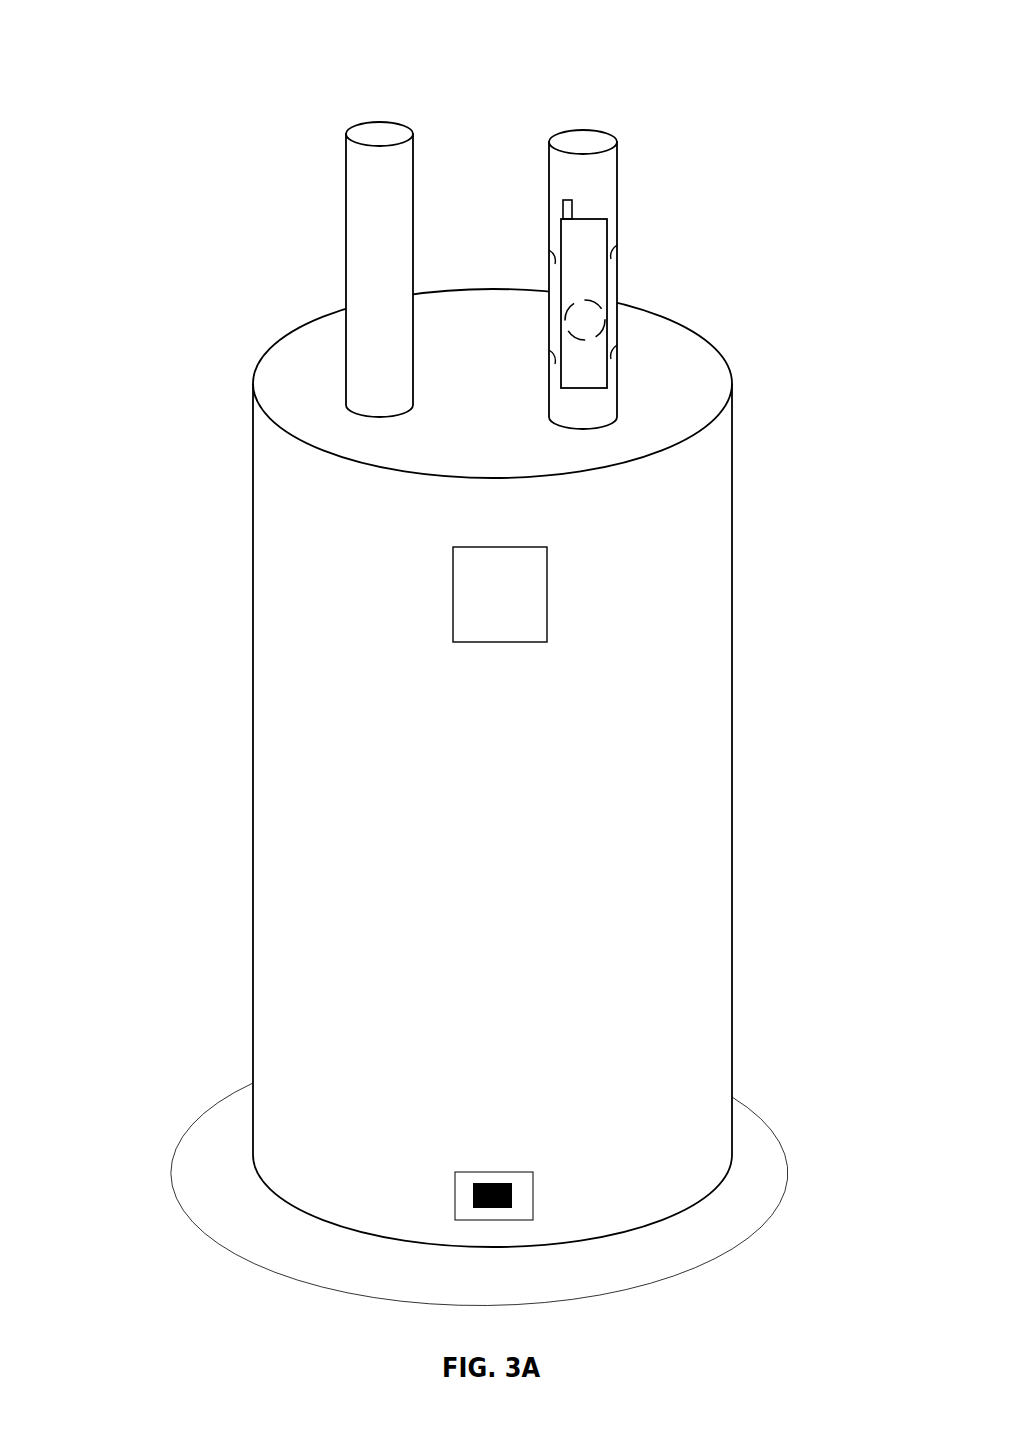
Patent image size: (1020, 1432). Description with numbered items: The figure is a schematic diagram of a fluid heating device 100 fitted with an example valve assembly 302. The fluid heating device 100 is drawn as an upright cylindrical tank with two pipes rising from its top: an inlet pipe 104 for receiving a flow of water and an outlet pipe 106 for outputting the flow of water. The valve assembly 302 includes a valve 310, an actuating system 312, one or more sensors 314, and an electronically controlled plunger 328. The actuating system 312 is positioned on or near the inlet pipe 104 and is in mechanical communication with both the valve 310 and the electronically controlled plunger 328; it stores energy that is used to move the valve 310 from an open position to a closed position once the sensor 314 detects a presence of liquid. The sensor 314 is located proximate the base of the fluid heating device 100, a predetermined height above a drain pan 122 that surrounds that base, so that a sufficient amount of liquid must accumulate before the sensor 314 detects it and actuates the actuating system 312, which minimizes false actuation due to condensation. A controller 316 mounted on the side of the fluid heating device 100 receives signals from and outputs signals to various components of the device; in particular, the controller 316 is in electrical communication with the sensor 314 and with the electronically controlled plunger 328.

The fluid heating device 100 is at (203, 150).
The inlet pipe 104 is at (570, 132).
The outlet pipe 106 is at (378, 122).
The drain pan 122 is at (212, 1108).
The valve assembly 302 is at (592, 201).
The valve 310 is at (607, 323).
The actuating system 312 is at (607, 249).
The sensor 314 is at (512, 1193).
The controller 316 is at (547, 598).
The electronically controlled plunger 328 is at (557, 205).